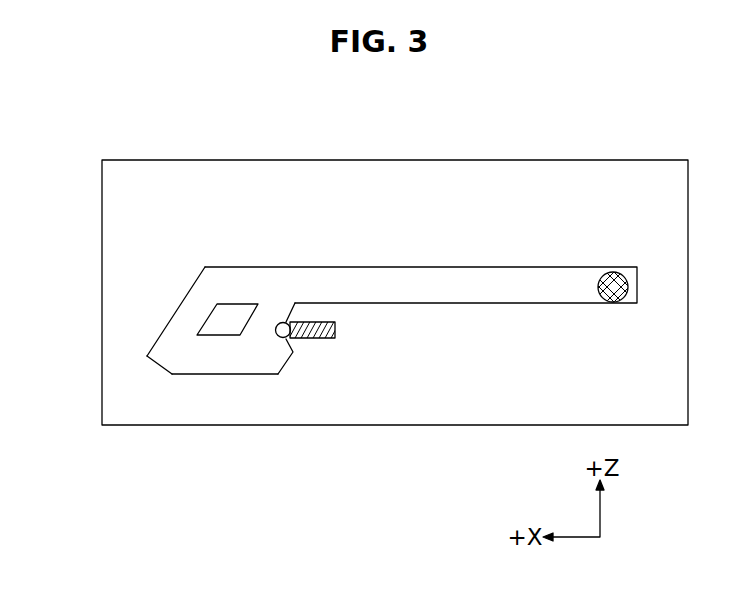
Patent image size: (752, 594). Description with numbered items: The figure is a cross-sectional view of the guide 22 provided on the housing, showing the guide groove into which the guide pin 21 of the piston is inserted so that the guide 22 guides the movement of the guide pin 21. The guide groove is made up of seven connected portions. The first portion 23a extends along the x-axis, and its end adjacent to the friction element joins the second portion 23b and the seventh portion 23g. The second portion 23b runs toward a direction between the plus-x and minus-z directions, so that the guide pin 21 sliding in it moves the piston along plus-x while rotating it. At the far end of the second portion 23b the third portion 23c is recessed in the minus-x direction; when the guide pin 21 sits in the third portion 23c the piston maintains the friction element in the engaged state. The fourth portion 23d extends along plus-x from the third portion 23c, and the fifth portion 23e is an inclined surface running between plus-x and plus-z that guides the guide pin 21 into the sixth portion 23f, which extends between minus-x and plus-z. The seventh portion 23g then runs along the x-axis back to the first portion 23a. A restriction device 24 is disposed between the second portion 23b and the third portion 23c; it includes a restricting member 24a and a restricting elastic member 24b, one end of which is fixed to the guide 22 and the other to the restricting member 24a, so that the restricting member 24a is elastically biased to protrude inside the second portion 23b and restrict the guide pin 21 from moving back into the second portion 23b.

The guide pin 21 is at (613, 272).
The guide 22 is at (440, 177).
The first portion 23a is at (460, 282).
The second portion 23b is at (268, 322).
The third portion 23c is at (283, 359).
The fourth portion 23d is at (218, 361).
The fifth portion 23e is at (160, 364).
The sixth portion 23f is at (185, 322).
The seventh portion 23g is at (233, 285).
The restriction device 24 is at (310, 303).
The restricting member 24a is at (283, 322).
The restricting elastic member 24b is at (323, 322).